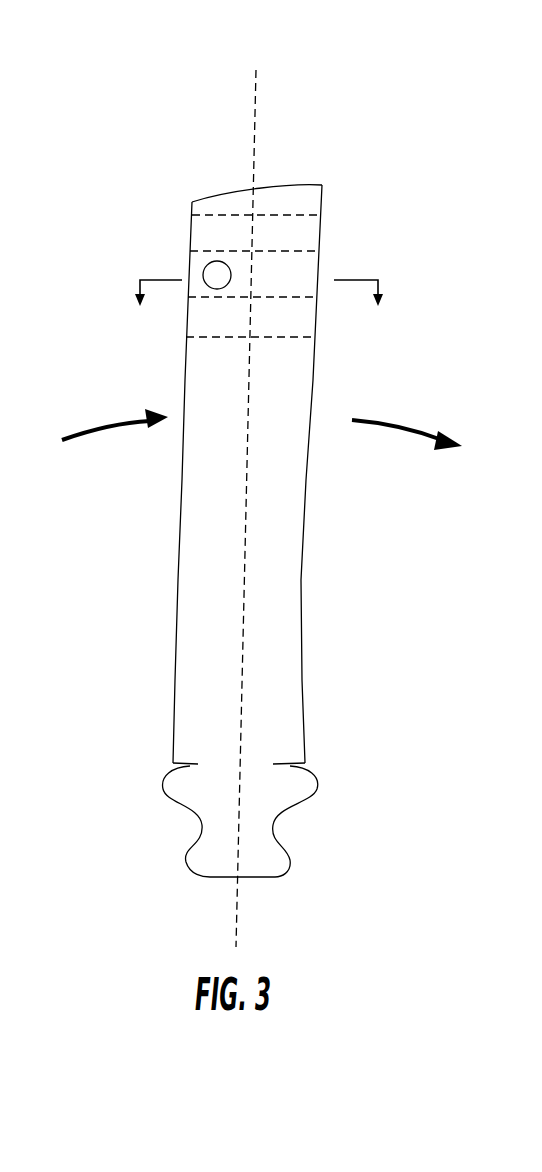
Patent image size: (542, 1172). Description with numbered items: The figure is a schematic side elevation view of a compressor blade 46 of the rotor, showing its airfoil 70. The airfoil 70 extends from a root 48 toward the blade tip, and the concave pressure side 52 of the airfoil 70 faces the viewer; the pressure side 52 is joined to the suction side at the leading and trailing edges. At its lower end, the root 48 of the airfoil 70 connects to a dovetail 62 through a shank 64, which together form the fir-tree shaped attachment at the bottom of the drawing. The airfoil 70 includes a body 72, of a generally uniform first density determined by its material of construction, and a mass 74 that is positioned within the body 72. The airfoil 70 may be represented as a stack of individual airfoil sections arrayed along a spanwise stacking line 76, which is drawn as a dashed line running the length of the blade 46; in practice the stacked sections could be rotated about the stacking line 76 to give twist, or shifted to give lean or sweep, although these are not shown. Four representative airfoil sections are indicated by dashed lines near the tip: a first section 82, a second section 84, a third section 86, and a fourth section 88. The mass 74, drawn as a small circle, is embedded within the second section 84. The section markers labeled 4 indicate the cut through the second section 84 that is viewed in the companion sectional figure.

The airfoil 70 is at (76, 351).
The compressor blade 46 is at (119, 666).
The body 72 is at (278, 541).
The concave pressure side 52 is at (282, 649).
The root 48 is at (294, 185).
The fourth section 88 is at (307, 203).
The third section 86 is at (298, 235).
The second section 84 is at (308, 284).
The first section 82 is at (300, 318).
The mass 74 is at (230, 278).
The spanwise stacking line 76 is at (253, 127).
The dovetail 62 is at (278, 878).
The shank 64 is at (201, 824).
The section line 4- 4 is at (258, 278).